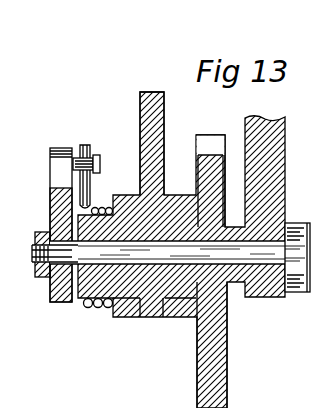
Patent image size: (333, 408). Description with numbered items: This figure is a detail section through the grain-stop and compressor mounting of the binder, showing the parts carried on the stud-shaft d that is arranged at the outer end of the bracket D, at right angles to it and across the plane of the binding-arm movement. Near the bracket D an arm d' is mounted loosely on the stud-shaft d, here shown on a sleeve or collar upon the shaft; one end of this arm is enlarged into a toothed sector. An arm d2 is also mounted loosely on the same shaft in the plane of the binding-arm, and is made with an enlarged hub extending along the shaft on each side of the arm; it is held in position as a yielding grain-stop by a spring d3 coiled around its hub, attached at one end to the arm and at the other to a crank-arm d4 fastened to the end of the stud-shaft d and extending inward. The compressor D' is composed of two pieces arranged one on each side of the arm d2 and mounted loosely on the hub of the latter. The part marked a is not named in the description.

The bracket D is at (194, 250).
The compressor D' is at (153, 330).
The stud-shaft d is at (148, 251).
The arm d' is at (227, 271).
The arm d2 is at (153, 100).
The spring d3 is at (87, 308).
The crank-arm d4 is at (60, 165).
The nut a is at (247, 253).